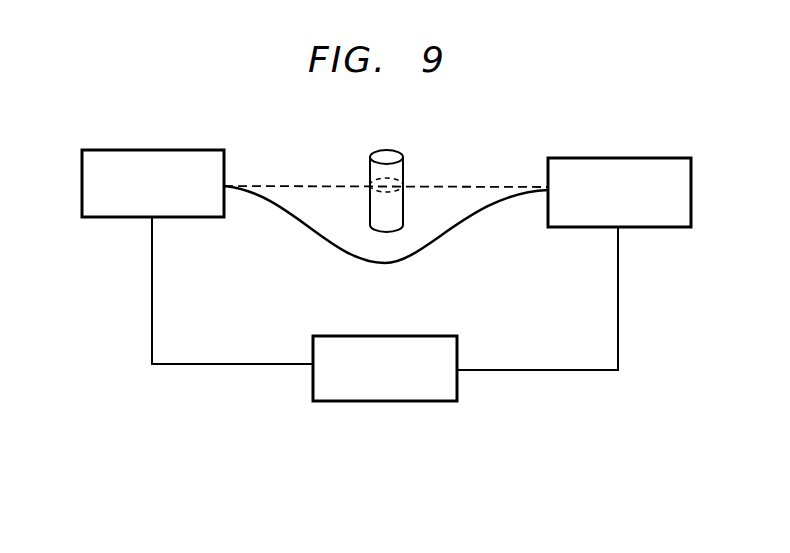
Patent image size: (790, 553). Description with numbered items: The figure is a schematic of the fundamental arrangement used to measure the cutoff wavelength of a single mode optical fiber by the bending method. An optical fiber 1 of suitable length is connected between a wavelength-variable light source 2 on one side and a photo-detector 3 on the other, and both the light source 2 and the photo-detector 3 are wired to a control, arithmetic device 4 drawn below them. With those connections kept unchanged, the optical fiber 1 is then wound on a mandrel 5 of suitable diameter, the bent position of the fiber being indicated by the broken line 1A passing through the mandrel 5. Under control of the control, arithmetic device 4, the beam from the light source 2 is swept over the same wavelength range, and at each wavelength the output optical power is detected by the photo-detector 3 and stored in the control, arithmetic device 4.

The optical fiber 1 is at (297, 218).
The broken line 1A is at (463, 188).
The wavelength-variable light source 2 is at (210, 150).
The photo-detector 3 is at (675, 158).
The control, arithmetic device 4 is at (442, 336).
The mandrel 5 is at (387, 148).